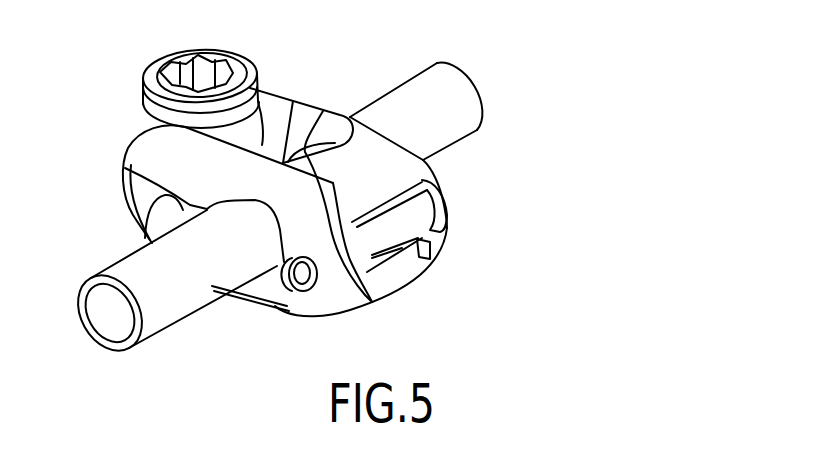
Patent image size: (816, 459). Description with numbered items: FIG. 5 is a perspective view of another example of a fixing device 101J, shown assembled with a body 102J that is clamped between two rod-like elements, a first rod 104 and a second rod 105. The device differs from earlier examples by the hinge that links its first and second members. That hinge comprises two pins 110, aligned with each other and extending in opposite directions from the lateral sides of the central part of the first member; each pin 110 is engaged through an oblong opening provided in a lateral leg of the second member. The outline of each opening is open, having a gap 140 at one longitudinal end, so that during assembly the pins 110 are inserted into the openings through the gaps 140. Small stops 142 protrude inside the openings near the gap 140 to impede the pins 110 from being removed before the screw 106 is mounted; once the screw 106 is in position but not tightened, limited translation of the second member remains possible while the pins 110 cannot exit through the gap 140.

The connector assembly 101J is at (113, 219).
The clamp body 102J is at (319, 95).
The first rod 104 is at (447, 72).
The second rod / pin 105 is at (300, 278).
The screw 106 is at (243, 82).
The pins 110 is at (287, 308).
The gap 140 is at (362, 294).
The stops 142 is at (418, 177).